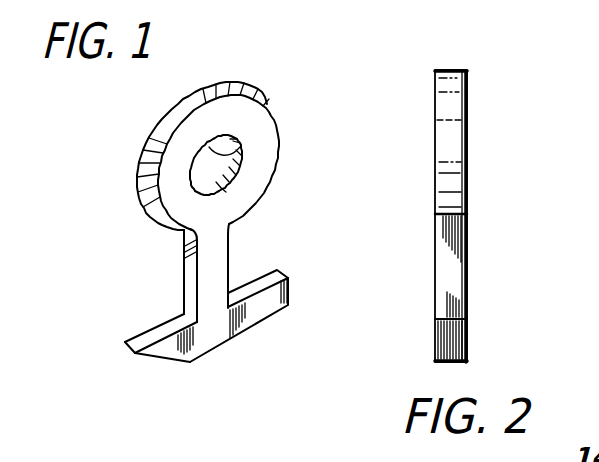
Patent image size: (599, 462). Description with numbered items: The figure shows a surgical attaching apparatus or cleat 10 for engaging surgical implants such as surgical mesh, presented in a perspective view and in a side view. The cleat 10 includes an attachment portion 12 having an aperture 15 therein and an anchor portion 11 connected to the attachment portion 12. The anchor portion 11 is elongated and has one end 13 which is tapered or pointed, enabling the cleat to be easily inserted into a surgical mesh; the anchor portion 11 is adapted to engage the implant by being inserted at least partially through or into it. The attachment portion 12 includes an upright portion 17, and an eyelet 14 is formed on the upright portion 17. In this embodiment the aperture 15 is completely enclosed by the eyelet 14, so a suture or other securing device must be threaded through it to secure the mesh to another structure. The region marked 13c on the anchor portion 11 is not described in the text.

In FIG. 1, the surgical attaching apparatus or cleat 10 is at (218, 199).
In FIG. 2, the surgical attaching apparatus or cleat 10 is at (502, 186).
In FIG. 1, the anchor portion 11 is at (235, 321).
In FIG. 2, the anchor portion 11 is at (491, 288).
In FIG. 1, the attachment portion 12 is at (198, 136).
In FIG. 2, the attachment portion 12 is at (496, 142).
In FIG. 1, the end 13 is at (136, 308).
In FIG. 1, the top surface of base 13c is at (308, 269).
In FIG. 1, the eyelet 14 is at (244, 136).
In FIG. 1, the aperture 15 is at (269, 151).
In FIG. 1, the upright portion 17 is at (261, 257).